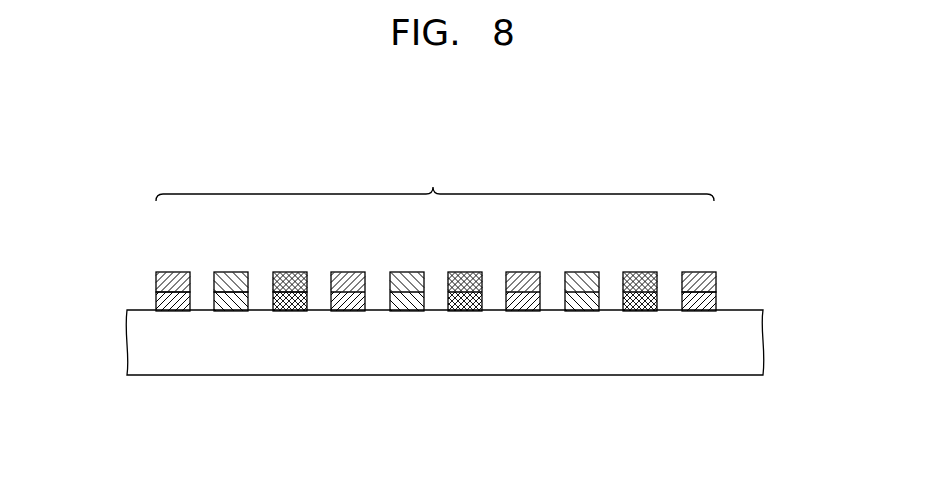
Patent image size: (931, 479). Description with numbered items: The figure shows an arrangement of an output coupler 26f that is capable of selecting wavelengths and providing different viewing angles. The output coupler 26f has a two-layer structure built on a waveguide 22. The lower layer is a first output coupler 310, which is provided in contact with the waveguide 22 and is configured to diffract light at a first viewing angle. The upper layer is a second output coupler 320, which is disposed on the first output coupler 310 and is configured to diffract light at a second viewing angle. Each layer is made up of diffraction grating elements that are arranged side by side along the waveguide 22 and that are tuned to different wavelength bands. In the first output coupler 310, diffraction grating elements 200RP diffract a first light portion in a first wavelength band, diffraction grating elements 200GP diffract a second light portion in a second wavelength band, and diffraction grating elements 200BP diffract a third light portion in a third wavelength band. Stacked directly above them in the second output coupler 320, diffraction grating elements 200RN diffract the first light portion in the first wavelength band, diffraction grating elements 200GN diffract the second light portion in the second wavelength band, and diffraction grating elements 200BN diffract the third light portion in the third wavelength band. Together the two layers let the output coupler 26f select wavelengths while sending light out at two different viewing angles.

The waveguide 22 is at (752, 345).
The output coupler 26f is at (435, 180).
The diffraction grating elements 200RN is at (156, 282).
The diffraction grating elements 200RP is at (156, 300).
The diffraction grating elements 200GN is at (231, 279).
The diffraction grating elements 200GP is at (230, 300).
The diffraction grating elements 200BN is at (290, 279).
The diffraction grating elements 200BP is at (287, 300).
The first output coupler 310 is at (718, 300).
The second output coupler 320 is at (718, 282).